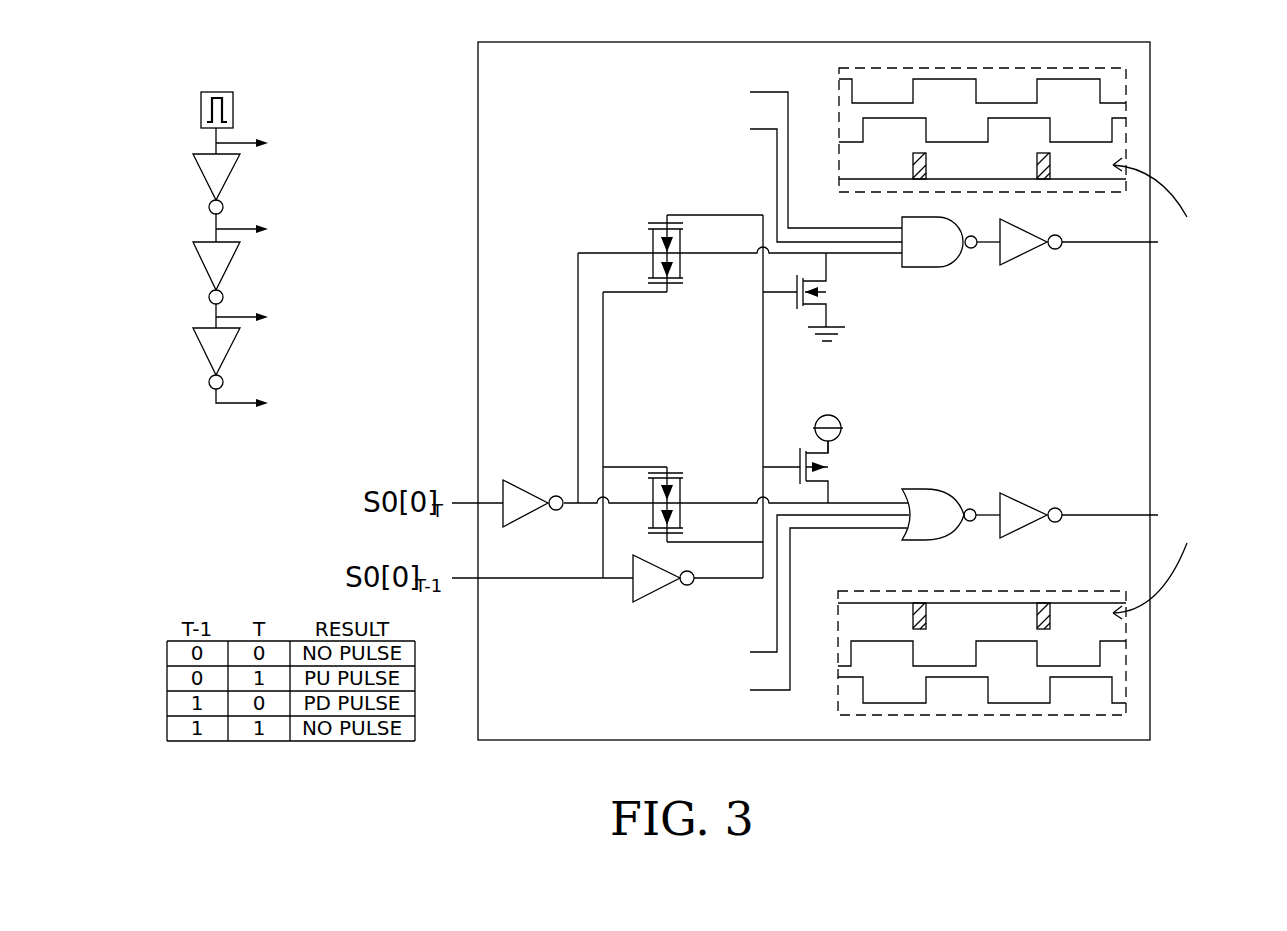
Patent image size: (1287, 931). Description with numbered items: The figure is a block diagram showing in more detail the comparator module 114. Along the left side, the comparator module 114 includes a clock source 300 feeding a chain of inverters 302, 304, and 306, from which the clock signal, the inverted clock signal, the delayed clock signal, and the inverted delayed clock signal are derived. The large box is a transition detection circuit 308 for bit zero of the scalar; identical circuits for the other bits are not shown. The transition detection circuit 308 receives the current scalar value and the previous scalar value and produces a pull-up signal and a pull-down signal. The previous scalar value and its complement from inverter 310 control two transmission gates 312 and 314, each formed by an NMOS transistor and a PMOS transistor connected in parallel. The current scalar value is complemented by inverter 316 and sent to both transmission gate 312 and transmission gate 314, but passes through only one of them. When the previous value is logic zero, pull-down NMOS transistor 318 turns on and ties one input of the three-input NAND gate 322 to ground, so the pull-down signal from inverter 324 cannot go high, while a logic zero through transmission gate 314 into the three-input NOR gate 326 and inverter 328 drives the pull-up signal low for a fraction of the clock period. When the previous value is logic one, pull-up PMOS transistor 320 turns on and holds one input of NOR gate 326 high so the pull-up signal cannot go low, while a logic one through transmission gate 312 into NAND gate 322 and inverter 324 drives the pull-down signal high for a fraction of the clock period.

The comparator module 114 is at (248, 48).
The clock source 300 is at (200, 101).
The inverter 302 is at (203, 175).
The inverter 304 is at (203, 263).
The inverter 306 is at (203, 349).
The transition detection circuit 308 is at (478, 68).
The inverter 310 is at (633, 592).
The transmission gate 312 is at (678, 283).
The transmission gate 314 is at (683, 473).
The inverter 316 is at (512, 522).
The pull-down NMOS transistor 318 is at (826, 297).
The pull-up PMOS transistor 320 is at (830, 455).
The 3-input NAND gate 322 is at (930, 268).
The inverter 324 is at (1025, 252).
The 3-input NOR gate 326 is at (925, 487).
The inverter 328 is at (1025, 503).